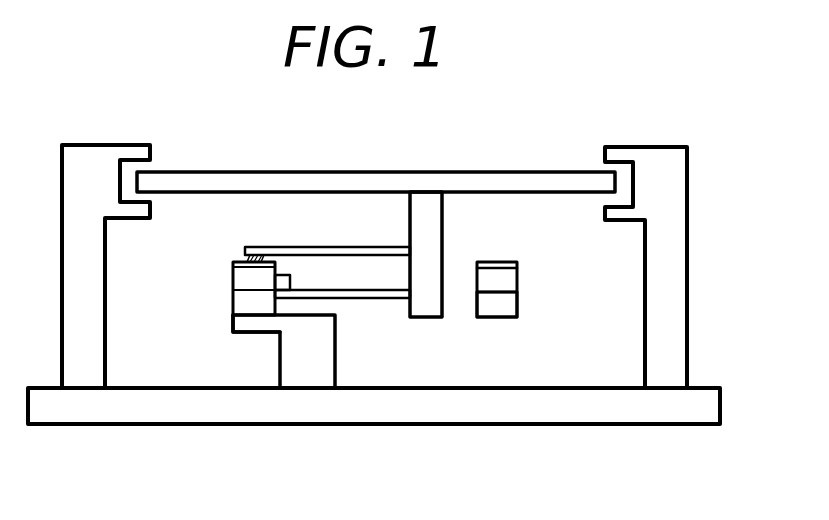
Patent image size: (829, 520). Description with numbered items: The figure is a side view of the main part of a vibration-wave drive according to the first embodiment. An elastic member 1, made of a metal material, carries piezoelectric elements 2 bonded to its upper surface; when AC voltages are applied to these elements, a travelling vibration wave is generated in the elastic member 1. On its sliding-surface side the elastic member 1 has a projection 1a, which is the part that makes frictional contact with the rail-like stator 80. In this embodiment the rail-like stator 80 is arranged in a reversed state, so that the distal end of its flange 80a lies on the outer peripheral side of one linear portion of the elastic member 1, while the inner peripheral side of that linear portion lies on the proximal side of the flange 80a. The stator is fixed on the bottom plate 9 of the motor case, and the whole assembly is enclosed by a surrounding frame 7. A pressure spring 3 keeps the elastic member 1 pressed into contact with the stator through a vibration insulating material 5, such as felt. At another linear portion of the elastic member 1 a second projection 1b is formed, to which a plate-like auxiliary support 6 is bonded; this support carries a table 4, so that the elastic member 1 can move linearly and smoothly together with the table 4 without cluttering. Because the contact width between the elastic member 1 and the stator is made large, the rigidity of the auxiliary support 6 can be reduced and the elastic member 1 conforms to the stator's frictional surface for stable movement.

The elastic member 1 is at (514, 279).
The projection 1a is at (517, 305).
The projection 1b is at (291, 286).
The piezoelectric elements 2 is at (504, 262).
The pressure spring 3 is at (344, 247).
The table 4 is at (508, 178).
The vibration insulating material 5 is at (246, 259).
The plate-like auxiliary support 6 is at (359, 299).
The frame 7 is at (673, 191).
The bottom plate 9 is at (618, 415).
The rail-like stator 80 is at (303, 380).
The flange 80a is at (234, 323).